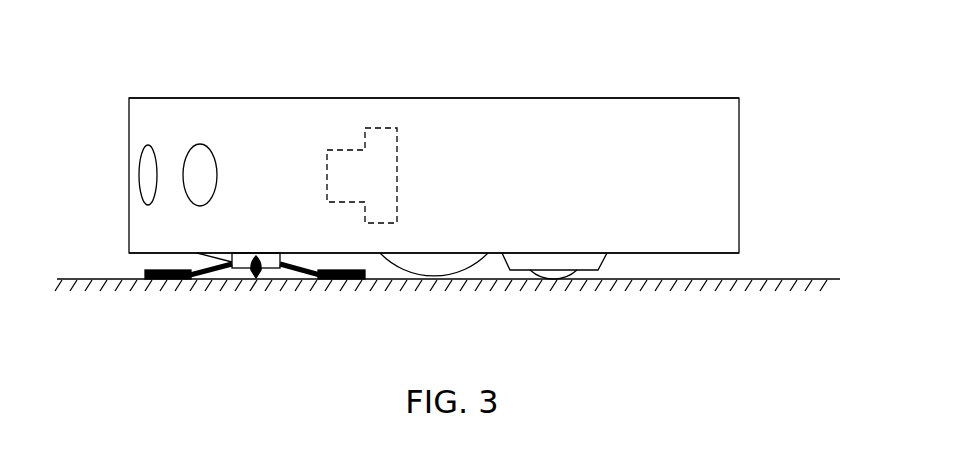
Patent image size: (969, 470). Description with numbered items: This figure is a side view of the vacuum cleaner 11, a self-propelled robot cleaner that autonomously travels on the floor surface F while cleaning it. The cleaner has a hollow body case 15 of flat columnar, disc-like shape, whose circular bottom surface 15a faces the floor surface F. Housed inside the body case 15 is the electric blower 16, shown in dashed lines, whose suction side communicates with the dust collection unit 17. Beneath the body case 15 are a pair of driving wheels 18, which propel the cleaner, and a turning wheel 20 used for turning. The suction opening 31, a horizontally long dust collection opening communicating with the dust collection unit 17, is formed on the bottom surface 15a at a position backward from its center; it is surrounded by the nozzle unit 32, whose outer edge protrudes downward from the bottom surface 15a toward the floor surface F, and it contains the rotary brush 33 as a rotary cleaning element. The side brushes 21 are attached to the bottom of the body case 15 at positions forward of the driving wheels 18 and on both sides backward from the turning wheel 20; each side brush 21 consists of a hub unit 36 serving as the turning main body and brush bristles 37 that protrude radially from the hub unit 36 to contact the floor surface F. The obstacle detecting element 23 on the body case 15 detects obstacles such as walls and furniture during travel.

The vacuum cleaner 11 is at (423, 70).
The body case 15 is at (496, 103).
The bottom surface 15a is at (660, 253).
The electric blower 16 is at (397, 173).
The dust collection unit 17 is at (692, 103).
The driving wheels 18 is at (412, 263).
The turning wheel 20 is at (265, 278).
The side brushes 21 is at (282, 270).
The obstacle detecting element 23 is at (190, 152).
The suction opening 31 is at (520, 270).
The nozzle unit 32 is at (590, 265).
The rotary brush 33 is at (557, 275).
The hub unit 36 is at (237, 268).
The brush bristles 37 is at (200, 280).
The floor surface F is at (716, 281).